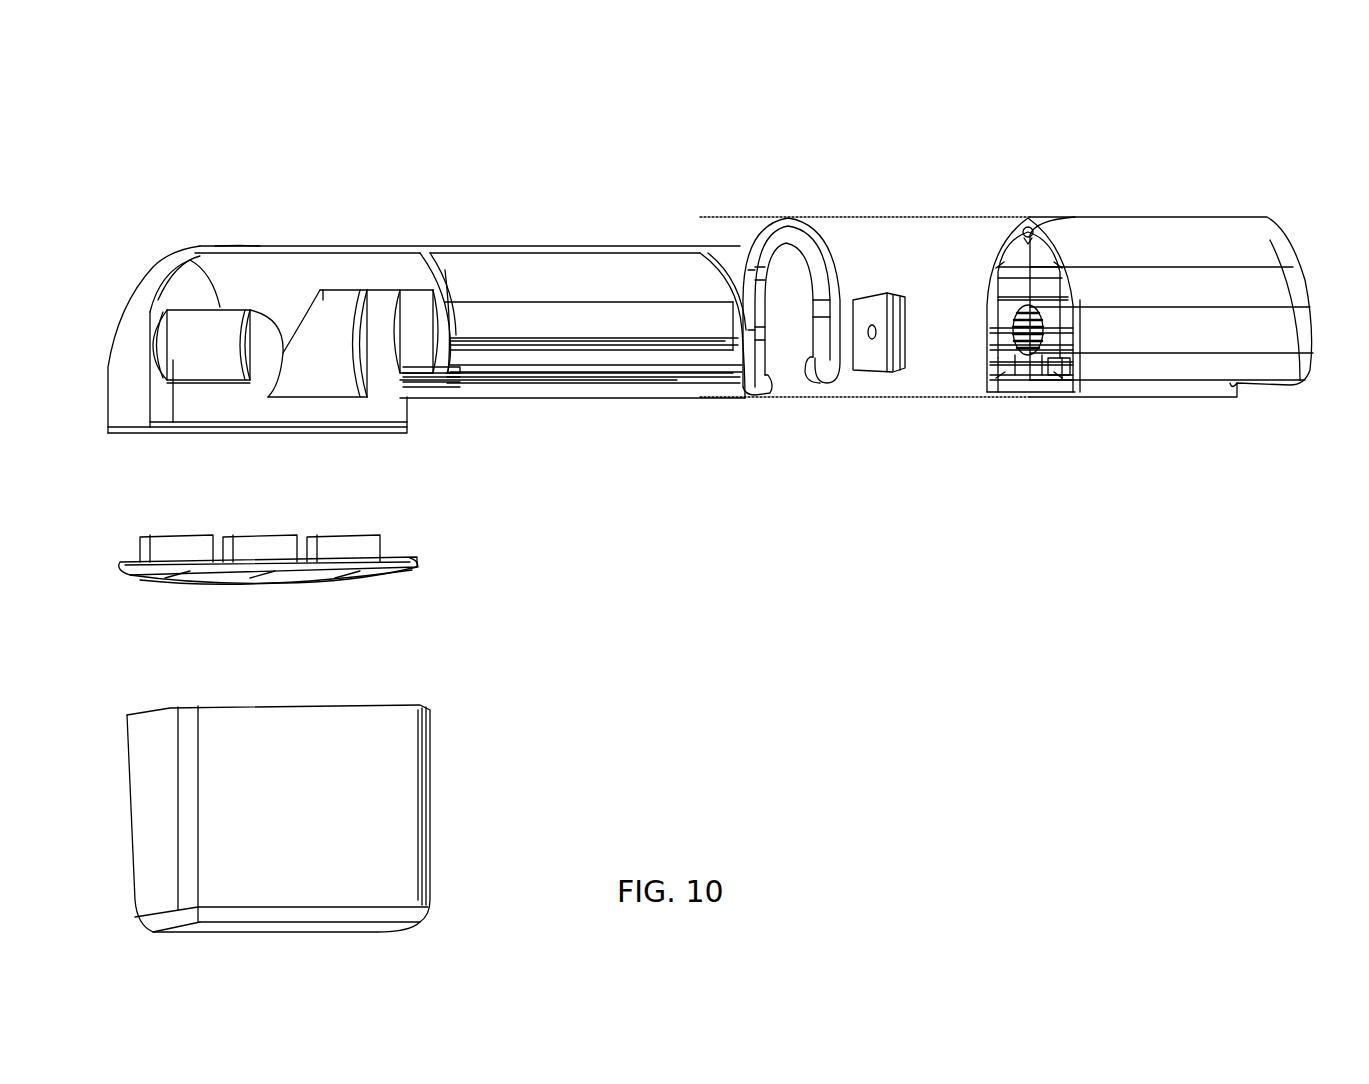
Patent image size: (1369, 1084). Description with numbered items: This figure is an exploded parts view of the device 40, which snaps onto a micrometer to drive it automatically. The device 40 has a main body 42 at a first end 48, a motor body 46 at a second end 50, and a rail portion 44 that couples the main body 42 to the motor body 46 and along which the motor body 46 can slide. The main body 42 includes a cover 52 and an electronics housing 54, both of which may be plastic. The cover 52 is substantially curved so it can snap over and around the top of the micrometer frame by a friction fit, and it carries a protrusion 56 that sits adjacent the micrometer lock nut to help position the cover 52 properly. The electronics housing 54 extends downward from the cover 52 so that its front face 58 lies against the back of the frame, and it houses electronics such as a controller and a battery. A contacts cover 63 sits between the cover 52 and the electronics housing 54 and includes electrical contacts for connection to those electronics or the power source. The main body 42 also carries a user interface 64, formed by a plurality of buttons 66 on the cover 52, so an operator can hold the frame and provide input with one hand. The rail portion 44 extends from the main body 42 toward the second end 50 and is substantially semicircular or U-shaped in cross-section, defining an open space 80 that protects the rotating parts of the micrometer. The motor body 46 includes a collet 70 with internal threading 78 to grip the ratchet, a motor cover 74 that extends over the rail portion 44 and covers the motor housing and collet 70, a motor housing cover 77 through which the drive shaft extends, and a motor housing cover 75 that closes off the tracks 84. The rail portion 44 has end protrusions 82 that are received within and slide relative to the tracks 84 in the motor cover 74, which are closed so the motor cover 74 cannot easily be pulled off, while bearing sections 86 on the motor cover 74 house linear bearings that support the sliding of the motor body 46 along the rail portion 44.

The device 40 is at (215, 97).
The main body 42 is at (322, 173).
The rail portion 44 is at (600, 195).
The motor body 46 is at (1118, 165).
The first end 48 is at (85, 335).
The second end 50 is at (1320, 262).
The cover 52 is at (150, 278).
The electronics housing 54 is at (130, 748).
The protrusion 56 is at (292, 335).
The front face 58 is at (412, 762).
The contacts cover 63 is at (122, 570).
The user interface 64 is at (280, 212).
The buttons 66 is at (225, 248).
The collet 70 is at (1052, 350).
The cover 74 is at (1199, 287).
The motor housing cover 75 is at (788, 228).
The motor housing cover 77 is at (882, 353).
The internal threading 78 is at (1025, 355).
The open space 80 is at (425, 362).
The end protrusions 82 is at (720, 343).
The tracks 84 is at (1050, 375).
The bearing sections 86 is at (1027, 233).